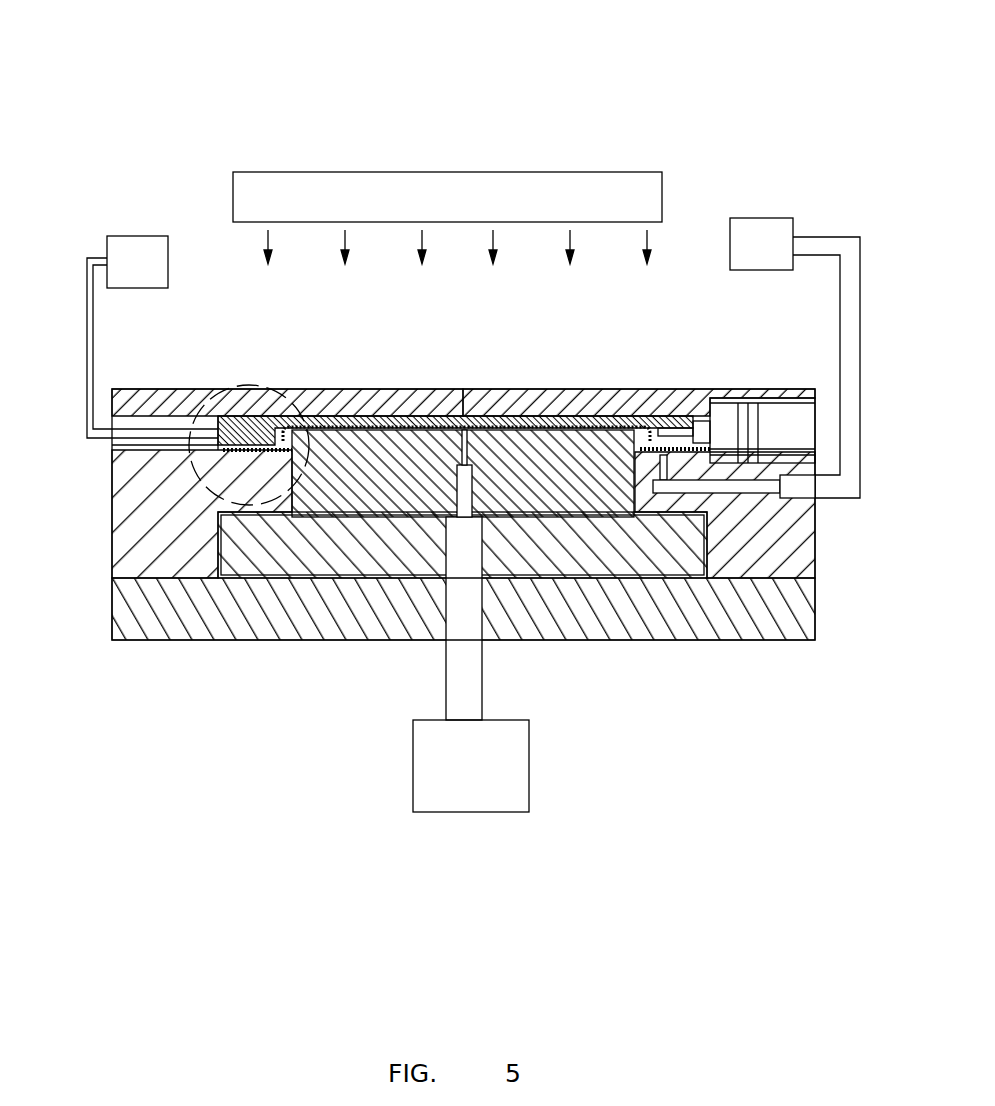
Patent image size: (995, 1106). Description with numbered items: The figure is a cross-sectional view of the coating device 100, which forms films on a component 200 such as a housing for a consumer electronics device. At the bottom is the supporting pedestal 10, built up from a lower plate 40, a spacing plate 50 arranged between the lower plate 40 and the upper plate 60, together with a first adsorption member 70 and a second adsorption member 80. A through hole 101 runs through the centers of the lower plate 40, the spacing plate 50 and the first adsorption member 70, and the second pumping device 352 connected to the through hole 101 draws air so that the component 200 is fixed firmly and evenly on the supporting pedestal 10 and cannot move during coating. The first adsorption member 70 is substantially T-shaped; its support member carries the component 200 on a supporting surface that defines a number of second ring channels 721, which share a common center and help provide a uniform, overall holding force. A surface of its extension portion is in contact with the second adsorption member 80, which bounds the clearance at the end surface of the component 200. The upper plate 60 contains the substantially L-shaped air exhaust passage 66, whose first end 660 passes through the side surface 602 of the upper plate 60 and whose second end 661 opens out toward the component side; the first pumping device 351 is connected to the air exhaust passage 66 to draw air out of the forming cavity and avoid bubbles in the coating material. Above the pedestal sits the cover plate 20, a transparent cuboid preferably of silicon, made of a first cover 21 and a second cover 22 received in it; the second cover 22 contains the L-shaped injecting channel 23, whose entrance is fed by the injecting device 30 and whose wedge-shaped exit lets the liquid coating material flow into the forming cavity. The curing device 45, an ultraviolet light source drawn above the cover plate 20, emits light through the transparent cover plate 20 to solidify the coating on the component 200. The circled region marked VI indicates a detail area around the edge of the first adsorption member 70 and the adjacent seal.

The coating device 100 is at (447, 33).
The supporting pedestal 10 is at (96, 522).
The curing device 45 is at (287, 193).
The injecting device 30 is at (140, 253).
The first pumping device 351 is at (763, 225).
The cover plate 20 is at (463, 347).
The first cover 21 is at (346, 400).
The second cover 22 is at (639, 372).
The second ring channels 721 is at (627, 415).
The component 200 is at (574, 425).
The enlarged detail region VI is at (186, 400).
The injecting channel 23 is at (228, 400).
The first adsorption member 70 is at (318, 415).
The second adsorption member 80 is at (735, 450).
The upper plate 60 is at (145, 545).
The spacing plate 50 is at (283, 560).
The lower plate 40 is at (717, 623).
The air exhaust passage 66 is at (750, 487).
The second end 661 is at (664, 455).
The first end 660 is at (810, 487).
The side surface 602 is at (817, 567).
The through hole 101 is at (484, 643).
The second pumping device 352 is at (508, 778).